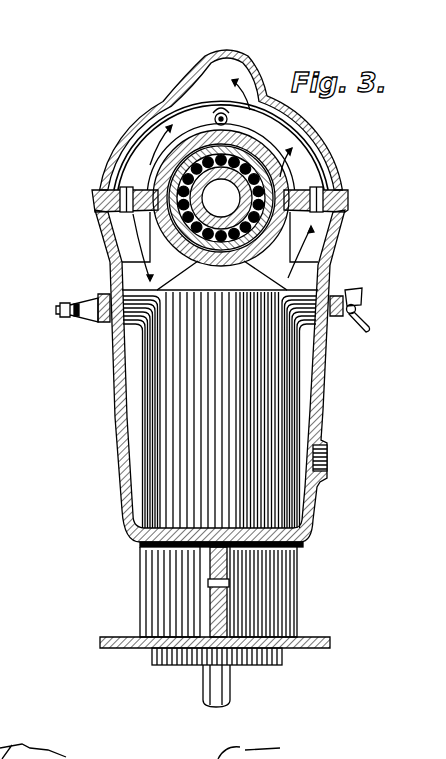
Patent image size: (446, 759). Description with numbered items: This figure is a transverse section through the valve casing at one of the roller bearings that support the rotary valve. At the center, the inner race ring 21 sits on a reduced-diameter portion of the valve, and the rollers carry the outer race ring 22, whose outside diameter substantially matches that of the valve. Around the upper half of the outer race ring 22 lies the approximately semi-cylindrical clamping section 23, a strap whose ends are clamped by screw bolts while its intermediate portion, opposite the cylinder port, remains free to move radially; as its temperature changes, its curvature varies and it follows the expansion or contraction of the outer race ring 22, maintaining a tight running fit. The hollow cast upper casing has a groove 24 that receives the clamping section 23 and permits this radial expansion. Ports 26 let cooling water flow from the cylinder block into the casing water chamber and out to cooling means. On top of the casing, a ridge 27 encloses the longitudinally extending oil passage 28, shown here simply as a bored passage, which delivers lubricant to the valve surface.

The inner race ring 21 is at (155, 183).
The outer race ring 22 is at (165, 181).
The clamping section 23 is at (178, 170).
The groove 24 is at (275, 140).
The port 26 is at (110, 192).
The ridge 27 is at (215, 113).
The oil passage 28 is at (217, 117).